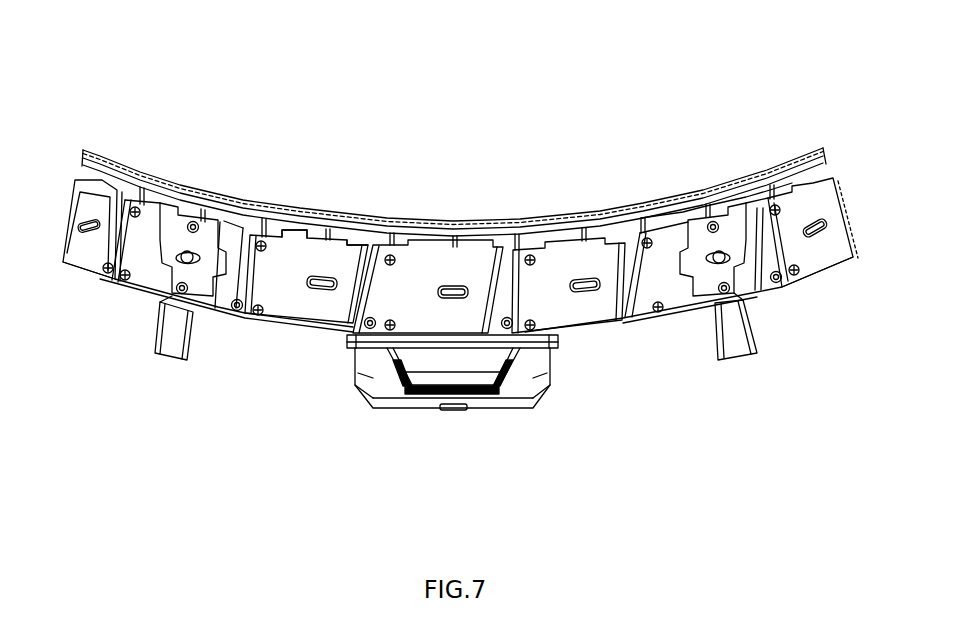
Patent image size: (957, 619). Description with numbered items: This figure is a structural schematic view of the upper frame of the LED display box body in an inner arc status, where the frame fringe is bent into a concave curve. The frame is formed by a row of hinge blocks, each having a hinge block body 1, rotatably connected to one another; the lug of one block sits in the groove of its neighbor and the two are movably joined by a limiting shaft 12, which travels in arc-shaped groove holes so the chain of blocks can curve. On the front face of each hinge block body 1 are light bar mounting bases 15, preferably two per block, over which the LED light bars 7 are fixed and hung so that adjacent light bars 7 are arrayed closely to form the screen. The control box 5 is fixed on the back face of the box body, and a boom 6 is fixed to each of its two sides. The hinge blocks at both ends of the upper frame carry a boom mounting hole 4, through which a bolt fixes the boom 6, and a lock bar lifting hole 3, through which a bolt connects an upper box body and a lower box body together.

The hinge block body 1 is at (290, 302).
The lock bar lifting hole 3 is at (712, 262).
The boom mounting hole 4 is at (695, 190).
The control box 5 is at (485, 404).
The boom 6 is at (737, 338).
The light bar 7 is at (182, 195).
The limiting shaft 12 is at (140, 275).
The light bar mounting base 15 is at (292, 240).